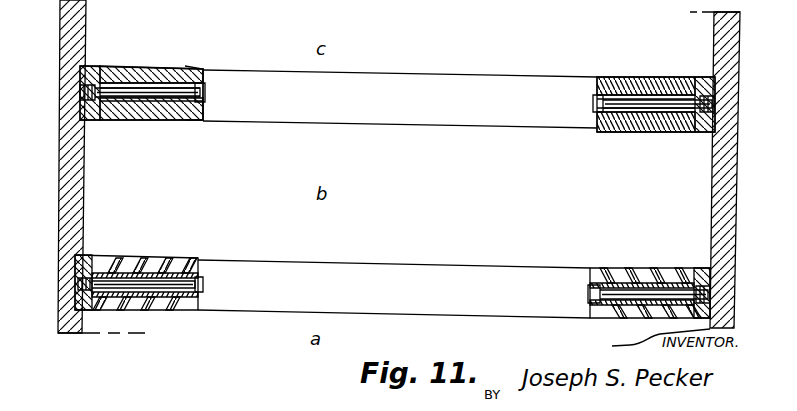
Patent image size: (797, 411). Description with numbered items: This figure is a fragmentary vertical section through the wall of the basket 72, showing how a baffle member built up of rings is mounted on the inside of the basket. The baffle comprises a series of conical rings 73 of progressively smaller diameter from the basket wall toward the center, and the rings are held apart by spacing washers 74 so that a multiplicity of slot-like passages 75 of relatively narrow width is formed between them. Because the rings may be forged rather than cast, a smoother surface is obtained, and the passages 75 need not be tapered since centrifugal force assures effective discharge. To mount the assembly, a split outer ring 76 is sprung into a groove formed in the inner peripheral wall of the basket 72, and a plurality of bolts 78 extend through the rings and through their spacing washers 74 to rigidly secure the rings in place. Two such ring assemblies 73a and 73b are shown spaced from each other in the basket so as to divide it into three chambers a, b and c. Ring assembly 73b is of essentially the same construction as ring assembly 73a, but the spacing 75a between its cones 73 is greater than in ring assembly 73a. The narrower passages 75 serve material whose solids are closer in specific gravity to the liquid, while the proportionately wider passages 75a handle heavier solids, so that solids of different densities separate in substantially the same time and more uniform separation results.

The basket 72 is at (61, 23).
The outer ring 76 is at (80, 73).
The passages 75 is at (158, 67).
The rings 73 is at (151, 119).
The washers 74 is at (168, 120).
The bolts 78 is at (207, 92).
The spacing 75a is at (160, 262).
The ring assembly 73a is at (400, 99).
The ring assembly 73b is at (394, 289).